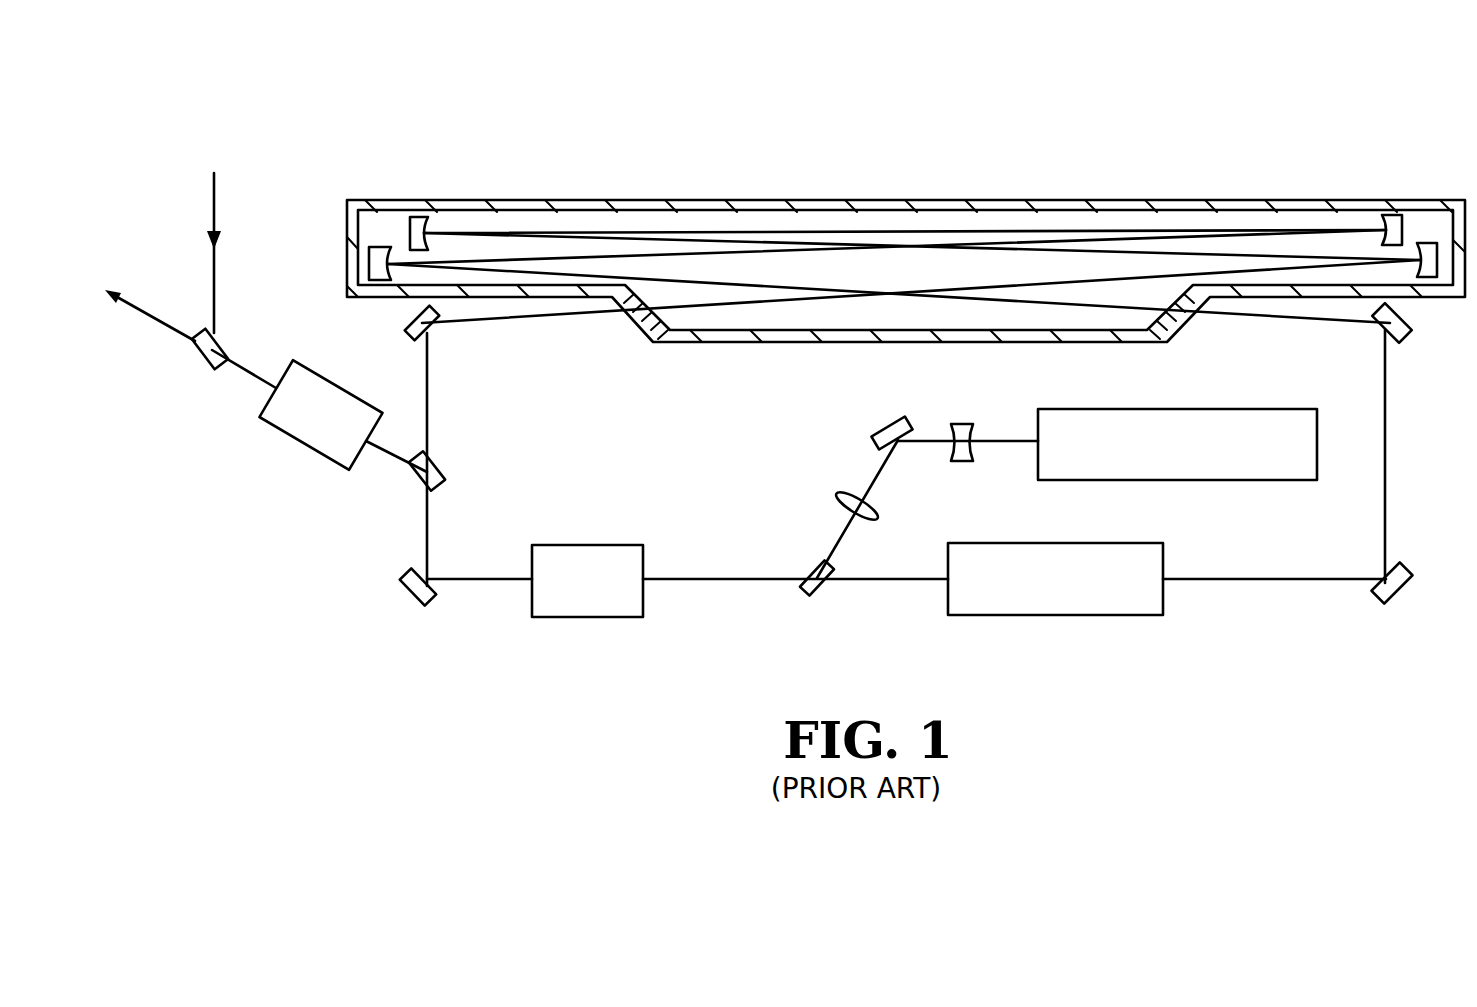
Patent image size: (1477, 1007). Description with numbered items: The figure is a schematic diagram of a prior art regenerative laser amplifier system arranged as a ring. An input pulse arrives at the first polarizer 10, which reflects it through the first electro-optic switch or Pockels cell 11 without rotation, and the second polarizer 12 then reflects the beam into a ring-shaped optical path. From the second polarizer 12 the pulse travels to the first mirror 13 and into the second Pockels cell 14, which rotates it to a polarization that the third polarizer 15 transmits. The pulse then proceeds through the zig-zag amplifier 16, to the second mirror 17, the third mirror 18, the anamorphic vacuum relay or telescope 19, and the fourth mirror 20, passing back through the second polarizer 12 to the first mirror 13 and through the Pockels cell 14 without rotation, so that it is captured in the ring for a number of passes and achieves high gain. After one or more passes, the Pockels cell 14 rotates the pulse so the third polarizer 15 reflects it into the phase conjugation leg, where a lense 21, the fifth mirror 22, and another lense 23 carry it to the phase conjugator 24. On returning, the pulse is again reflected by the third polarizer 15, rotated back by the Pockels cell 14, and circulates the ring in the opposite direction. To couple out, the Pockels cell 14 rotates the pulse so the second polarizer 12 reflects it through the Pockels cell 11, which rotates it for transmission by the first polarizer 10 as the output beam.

The first polarizer 10 is at (179, 365).
The first electro-optic switch or Pockels cell 11 is at (310, 424).
The second polarizer 12 is at (461, 460).
The first mirror 13 is at (403, 609).
The second Pockels cell 14 is at (588, 554).
The third polarizer 15 is at (809, 605).
The zig-zag amplifier 16 is at (1055, 605).
The second mirror 17 is at (1412, 598).
The third mirror 18 is at (1414, 345).
The anamorphic vacuum relay (telescope) 19 is at (906, 248).
The fourth mirror 20 is at (382, 324).
The lense 21 is at (837, 487).
The fifth mirror 22 is at (881, 418).
The lense 23 is at (980, 418).
The phase conjugator 24 is at (1177, 421).